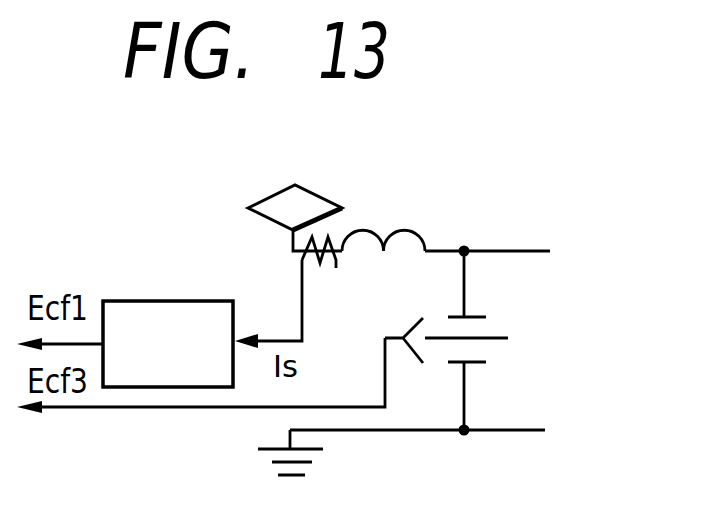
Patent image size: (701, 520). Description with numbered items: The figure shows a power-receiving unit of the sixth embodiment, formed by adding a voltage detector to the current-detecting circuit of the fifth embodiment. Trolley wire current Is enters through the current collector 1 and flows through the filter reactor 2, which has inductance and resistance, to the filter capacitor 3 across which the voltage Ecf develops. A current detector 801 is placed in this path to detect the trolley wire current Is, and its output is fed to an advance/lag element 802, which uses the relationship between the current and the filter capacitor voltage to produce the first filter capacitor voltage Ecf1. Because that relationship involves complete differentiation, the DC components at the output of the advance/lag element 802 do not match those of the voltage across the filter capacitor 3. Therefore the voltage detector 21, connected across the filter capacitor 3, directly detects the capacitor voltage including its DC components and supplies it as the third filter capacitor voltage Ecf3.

The current collector 1 is at (316, 195).
The filter reactor 2 is at (404, 228).
The filter capacitor 3 is at (478, 312).
The voltage detector 21 is at (414, 320).
The current detector 801 is at (336, 268).
The advance/lag element 802 is at (153, 300).